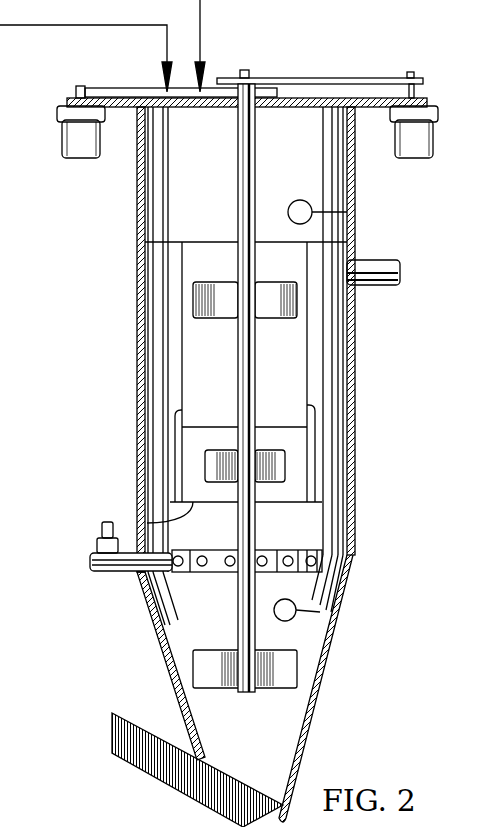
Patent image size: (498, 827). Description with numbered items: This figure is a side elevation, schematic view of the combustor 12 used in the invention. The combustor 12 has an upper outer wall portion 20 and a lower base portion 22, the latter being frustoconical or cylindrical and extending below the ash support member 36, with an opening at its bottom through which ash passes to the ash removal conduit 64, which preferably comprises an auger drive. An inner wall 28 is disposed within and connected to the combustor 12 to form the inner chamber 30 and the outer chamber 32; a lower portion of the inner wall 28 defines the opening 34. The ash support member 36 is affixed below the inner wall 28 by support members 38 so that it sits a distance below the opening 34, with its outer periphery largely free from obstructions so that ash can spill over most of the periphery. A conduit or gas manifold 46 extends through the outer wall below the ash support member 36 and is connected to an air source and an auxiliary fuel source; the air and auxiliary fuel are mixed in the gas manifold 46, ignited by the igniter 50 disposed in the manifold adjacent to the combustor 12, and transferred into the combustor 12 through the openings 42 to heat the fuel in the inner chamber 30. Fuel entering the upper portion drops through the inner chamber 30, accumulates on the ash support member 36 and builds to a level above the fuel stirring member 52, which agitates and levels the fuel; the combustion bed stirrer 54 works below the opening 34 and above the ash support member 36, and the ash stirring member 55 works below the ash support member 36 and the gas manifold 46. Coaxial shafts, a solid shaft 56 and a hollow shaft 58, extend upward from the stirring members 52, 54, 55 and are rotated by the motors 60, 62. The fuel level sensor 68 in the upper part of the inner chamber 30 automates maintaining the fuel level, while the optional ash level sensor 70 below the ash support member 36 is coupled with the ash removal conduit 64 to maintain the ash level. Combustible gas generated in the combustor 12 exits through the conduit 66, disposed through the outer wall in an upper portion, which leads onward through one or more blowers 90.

The combustor 12 is at (377, 28).
The upper outer wall portion 20 is at (140, 218).
The lower base portion 22 is at (350, 565).
The inner wall 28 is at (182, 297).
The inner chamber 30 is at (297, 143).
The outer chamber 32 is at (160, 307).
The opening 34 is at (287, 428).
The ash support member 36 is at (140, 518).
The support members 38 is at (178, 440).
The openings 42 is at (262, 557).
The conduit or gas manifold 46 is at (95, 562).
The igniter 50 is at (100, 545).
The fuel stirring member 52 is at (212, 295).
The combustion bed stirrer 54 is at (212, 465).
The ash stirring member 55 is at (208, 663).
The solid shaft 56 is at (248, 72).
The hollow shaft 58 is at (238, 206).
The motor 60 is at (80, 152).
The motor 62 is at (410, 145).
The ash removal conduit 64 is at (157, 742).
The conduit 66 is at (370, 266).
The fuel level sensor 68 is at (312, 207).
The ash level sensor 70 is at (296, 618).
The blowers 90 is at (0, 775).